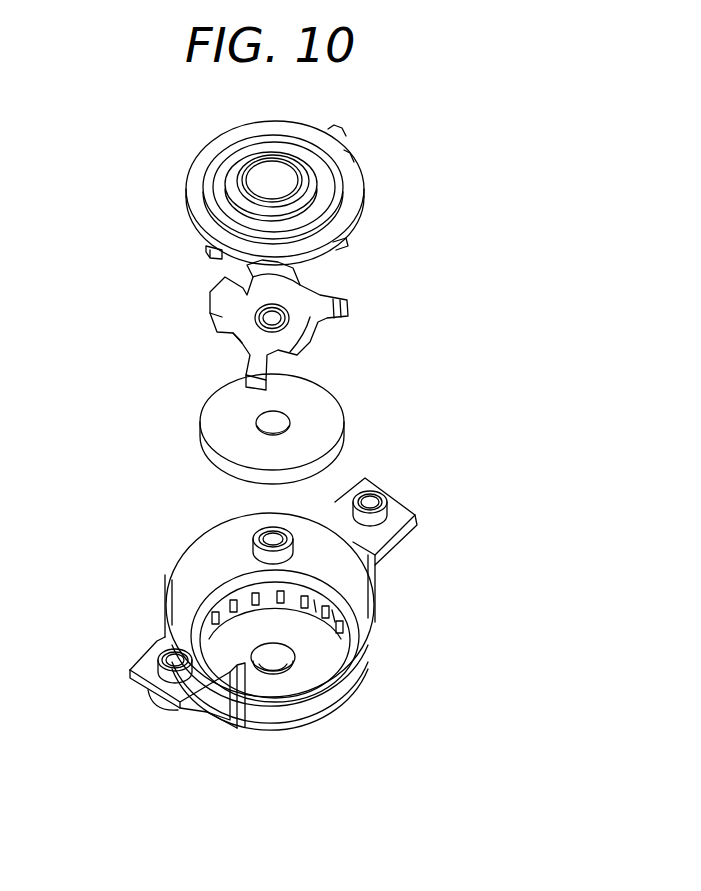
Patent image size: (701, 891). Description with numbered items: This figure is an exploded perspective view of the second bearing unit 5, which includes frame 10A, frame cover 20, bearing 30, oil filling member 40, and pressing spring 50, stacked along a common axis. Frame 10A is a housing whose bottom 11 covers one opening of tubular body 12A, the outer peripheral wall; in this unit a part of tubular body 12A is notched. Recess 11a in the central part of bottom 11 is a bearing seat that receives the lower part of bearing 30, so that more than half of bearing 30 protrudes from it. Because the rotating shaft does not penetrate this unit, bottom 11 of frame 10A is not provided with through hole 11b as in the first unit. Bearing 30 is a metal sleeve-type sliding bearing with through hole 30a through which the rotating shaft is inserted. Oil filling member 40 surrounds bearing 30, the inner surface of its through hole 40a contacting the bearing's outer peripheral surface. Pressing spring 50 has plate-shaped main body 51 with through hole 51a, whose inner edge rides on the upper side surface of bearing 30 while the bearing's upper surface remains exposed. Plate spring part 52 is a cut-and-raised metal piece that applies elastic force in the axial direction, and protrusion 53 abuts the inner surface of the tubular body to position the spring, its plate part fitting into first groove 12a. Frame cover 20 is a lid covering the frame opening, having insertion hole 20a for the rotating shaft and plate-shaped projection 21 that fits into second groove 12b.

The second bearing unit 5 is at (71, 147).
The frame cover 20 is at (217, 143).
The insertion hole 20a is at (273, 177).
The projection 21 is at (208, 250).
The pressing spring 50 is at (224, 302).
The main body 51 is at (290, 321).
The through hole 51a is at (276, 322).
The plate spring part 52 is at (287, 272).
The protrusion 53 is at (345, 301).
The oil filling member 40 is at (240, 434).
The through hole 40a is at (275, 430).
The bearing 30 is at (270, 557).
The through hole 30a is at (273, 526).
The frame 10A is at (158, 600).
The bottom 11 is at (313, 672).
The recess 11a is at (267, 655).
The through hole 11b is at (273, 672).
The tubular body 12A is at (365, 645).
The first groove 12a is at (293, 597).
The second groove 12b is at (335, 611).